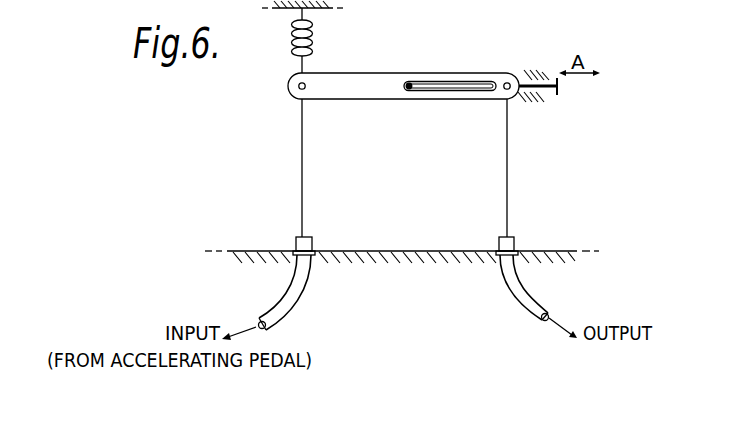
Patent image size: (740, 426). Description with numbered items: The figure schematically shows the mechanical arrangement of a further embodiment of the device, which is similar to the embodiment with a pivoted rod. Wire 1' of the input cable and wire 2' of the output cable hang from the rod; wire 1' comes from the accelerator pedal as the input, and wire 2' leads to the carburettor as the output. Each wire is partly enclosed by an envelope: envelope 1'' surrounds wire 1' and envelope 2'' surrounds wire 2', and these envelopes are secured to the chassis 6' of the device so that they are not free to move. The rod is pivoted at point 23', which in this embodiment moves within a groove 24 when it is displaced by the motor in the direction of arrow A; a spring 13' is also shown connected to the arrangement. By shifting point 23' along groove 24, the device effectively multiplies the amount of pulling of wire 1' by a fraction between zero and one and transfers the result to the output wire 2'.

The spring 13' is at (332, 40).
The point 23' is at (426, 57).
The groove 24 is at (463, 84).
The wire 1' is at (275, 168).
The wire 2' is at (527, 168).
The chassis 6' is at (402, 232).
The envelope 1'' is at (301, 293).
The envelope 2'' is at (500, 288).